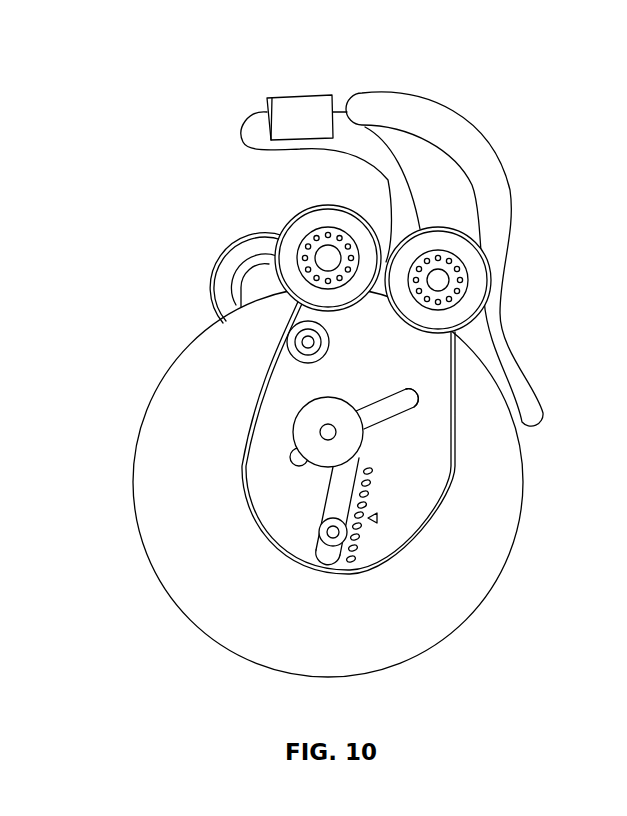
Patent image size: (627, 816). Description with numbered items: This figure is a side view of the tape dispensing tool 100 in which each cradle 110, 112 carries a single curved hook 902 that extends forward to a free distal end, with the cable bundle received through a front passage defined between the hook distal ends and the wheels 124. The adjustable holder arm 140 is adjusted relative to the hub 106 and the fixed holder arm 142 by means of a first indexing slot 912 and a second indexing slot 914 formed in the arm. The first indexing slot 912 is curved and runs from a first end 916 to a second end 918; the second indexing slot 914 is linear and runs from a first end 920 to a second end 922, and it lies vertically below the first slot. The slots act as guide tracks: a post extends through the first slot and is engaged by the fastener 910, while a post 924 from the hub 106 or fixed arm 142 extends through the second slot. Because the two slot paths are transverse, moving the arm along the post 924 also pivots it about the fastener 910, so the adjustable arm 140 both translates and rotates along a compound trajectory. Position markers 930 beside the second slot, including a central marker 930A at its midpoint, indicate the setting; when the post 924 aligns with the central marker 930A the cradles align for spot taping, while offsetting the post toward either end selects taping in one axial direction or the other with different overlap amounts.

The tape dispensing tool 100 is at (198, 143).
The hub 106 is at (334, 503).
The cradle 110 is at (524, 201).
The cradle 112 is at (255, 108).
The wheels 124 is at (328, 216).
The adjustable holder arm 140 is at (435, 355).
The fixed holder arm 142 is at (250, 284).
The hook 902 is at (423, 107).
The fastener 910 is at (312, 419).
The first indexing slot 912 is at (408, 415).
The second indexing slot 914 is at (324, 487).
The first end 916 is at (416, 398).
The second end 918 is at (297, 457).
The first end 920 is at (362, 455).
The second end 922 is at (330, 568).
The post 924 is at (326, 537).
The position markers 930 is at (367, 494).
The central marker 930A is at (378, 520).